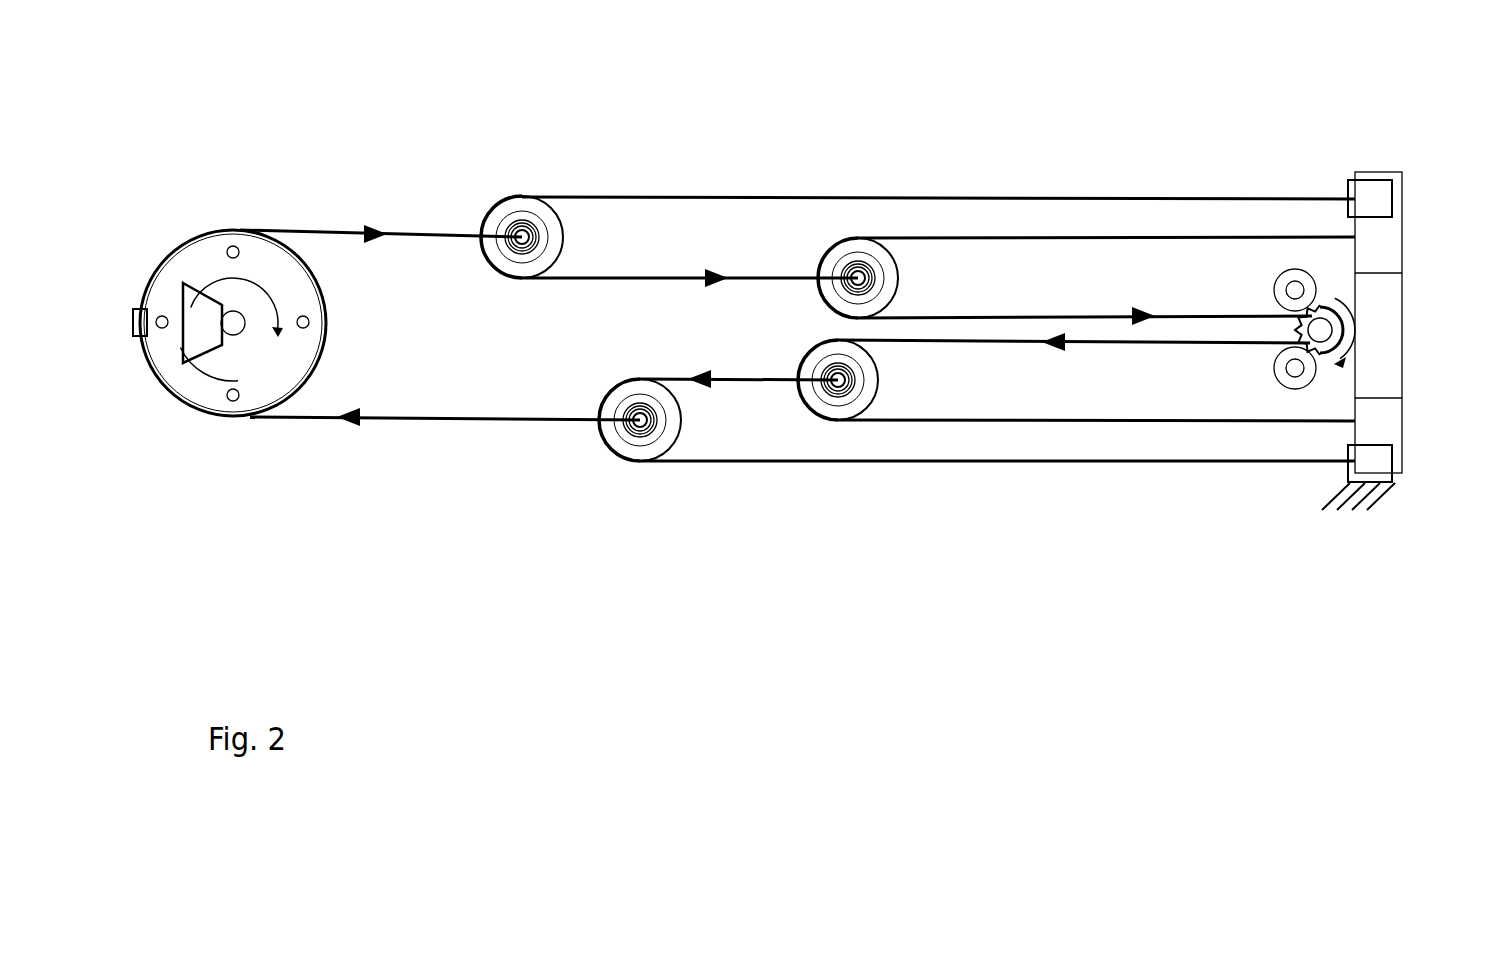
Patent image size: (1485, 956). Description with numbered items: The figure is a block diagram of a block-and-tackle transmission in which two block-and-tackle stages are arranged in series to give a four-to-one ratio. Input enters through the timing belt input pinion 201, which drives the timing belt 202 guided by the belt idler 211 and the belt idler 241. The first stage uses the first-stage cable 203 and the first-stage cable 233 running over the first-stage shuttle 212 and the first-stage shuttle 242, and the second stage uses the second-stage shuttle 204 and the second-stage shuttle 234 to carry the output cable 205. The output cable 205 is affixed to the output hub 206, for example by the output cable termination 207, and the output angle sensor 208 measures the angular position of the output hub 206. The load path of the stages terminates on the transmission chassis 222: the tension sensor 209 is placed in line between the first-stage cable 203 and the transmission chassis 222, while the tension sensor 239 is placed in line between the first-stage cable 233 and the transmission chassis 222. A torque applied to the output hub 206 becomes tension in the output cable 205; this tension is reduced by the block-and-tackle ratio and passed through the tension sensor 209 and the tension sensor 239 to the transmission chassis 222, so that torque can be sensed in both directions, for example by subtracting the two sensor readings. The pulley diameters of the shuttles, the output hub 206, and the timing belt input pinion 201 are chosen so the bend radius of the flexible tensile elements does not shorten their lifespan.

The timing belt input pinion 201 is at (1323, 325).
The timing belt 202 is at (948, 243).
The stage-1 cable 203 is at (733, 198).
The stage-2 shuttle 204 is at (498, 206).
The output cable 205 is at (418, 232).
The output hub 206 is at (187, 265).
The output cable termination 207 is at (135, 336).
The output angle sensor 208 is at (215, 345).
The tension sensor 209 is at (1370, 187).
The belt idler 211 is at (1289, 285).
The stage-1 shuttle 212 is at (855, 240).
The transmission chassis 222 is at (1400, 245).
The stage-1 cable 233 is at (717, 462).
The stage-2 shuttle 234 is at (617, 443).
The tension sensor 239 is at (1380, 470).
The belt idler 241 is at (1277, 372).
The stage-1 shuttle 242 is at (815, 405).